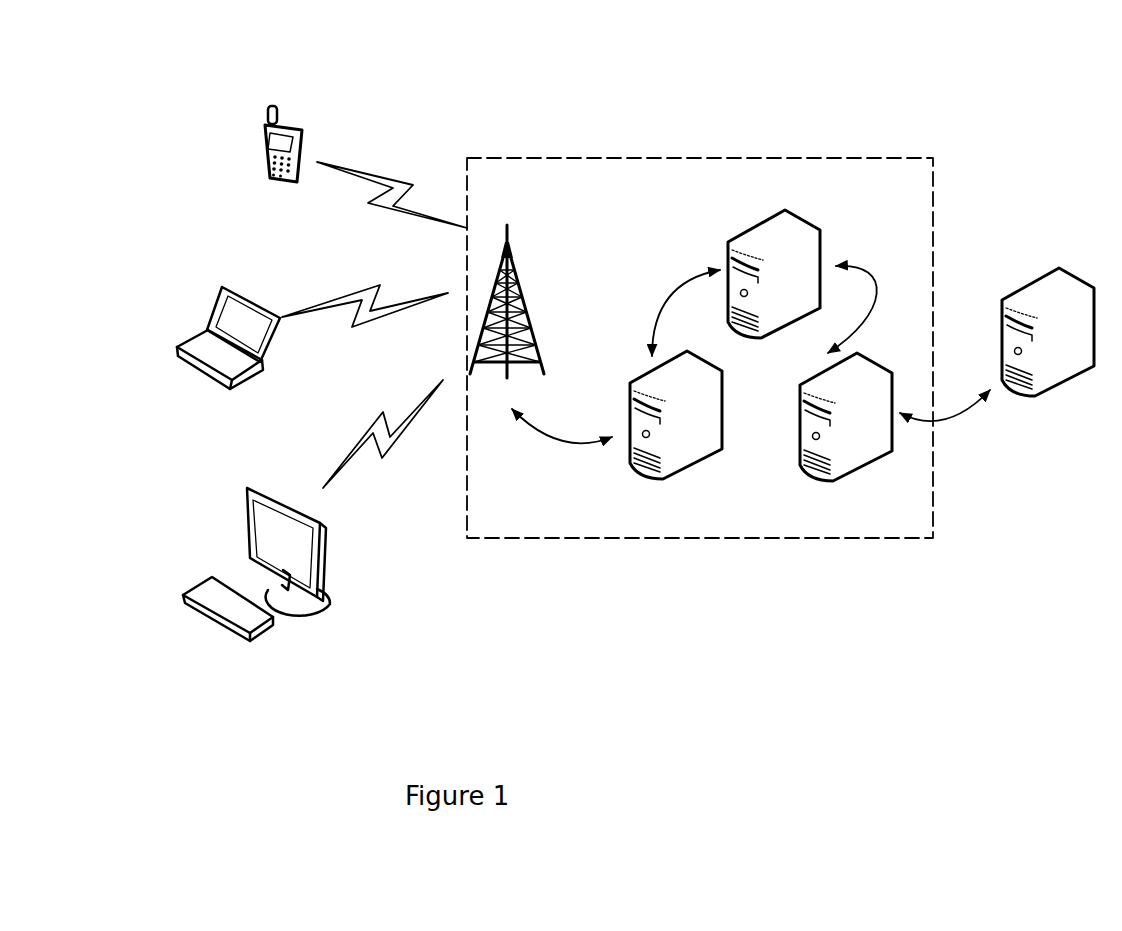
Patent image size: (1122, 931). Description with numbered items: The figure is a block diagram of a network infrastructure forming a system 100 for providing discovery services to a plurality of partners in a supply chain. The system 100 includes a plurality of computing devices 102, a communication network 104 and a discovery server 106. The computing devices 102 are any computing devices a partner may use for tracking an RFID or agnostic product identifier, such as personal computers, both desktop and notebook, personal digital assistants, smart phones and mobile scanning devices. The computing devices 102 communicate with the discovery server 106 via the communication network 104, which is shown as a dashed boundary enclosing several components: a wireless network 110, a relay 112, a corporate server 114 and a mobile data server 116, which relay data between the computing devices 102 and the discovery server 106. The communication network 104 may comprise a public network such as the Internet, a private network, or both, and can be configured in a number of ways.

The system 100 is at (820, 739).
The computing devices 102 is at (260, 130).
The communication network 104 is at (615, 154).
The discovery server 106 is at (1068, 283).
The wireless network 110 is at (523, 305).
The relay 112 is at (683, 455).
The corporate server 114 is at (783, 242).
The mobile data server 116 is at (812, 474).